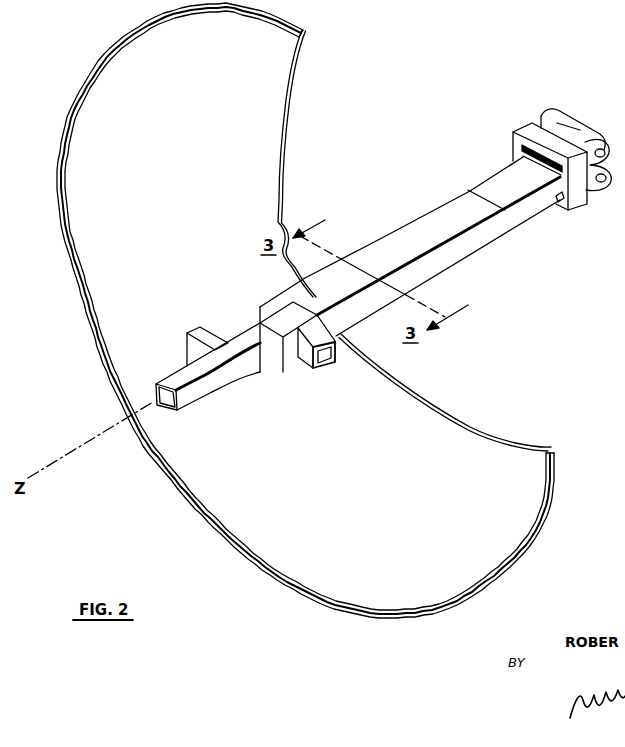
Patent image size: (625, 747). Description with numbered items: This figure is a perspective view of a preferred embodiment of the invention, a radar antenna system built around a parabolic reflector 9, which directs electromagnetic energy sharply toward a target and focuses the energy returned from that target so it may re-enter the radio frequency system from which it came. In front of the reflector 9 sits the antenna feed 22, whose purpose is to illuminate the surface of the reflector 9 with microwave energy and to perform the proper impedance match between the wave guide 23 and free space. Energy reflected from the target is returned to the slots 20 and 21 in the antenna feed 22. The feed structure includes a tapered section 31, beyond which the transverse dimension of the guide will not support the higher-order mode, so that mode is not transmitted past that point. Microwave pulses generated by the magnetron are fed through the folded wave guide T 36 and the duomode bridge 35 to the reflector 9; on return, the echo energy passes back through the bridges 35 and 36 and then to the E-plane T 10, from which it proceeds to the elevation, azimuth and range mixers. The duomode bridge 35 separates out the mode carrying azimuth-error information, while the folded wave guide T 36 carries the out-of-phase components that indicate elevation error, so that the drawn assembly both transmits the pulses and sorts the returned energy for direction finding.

The parabolic reflector 9 is at (105, 90).
The E-plane T 10 is at (303, 368).
The slot 20 is at (523, 152).
The slot 21 is at (559, 199).
The antenna feed 22 is at (481, 233).
The wave guide 23 is at (356, 294).
The tapered section 31 is at (268, 358).
The duomode bridge 35 is at (297, 367).
The folded wave guide T 36 is at (200, 336).